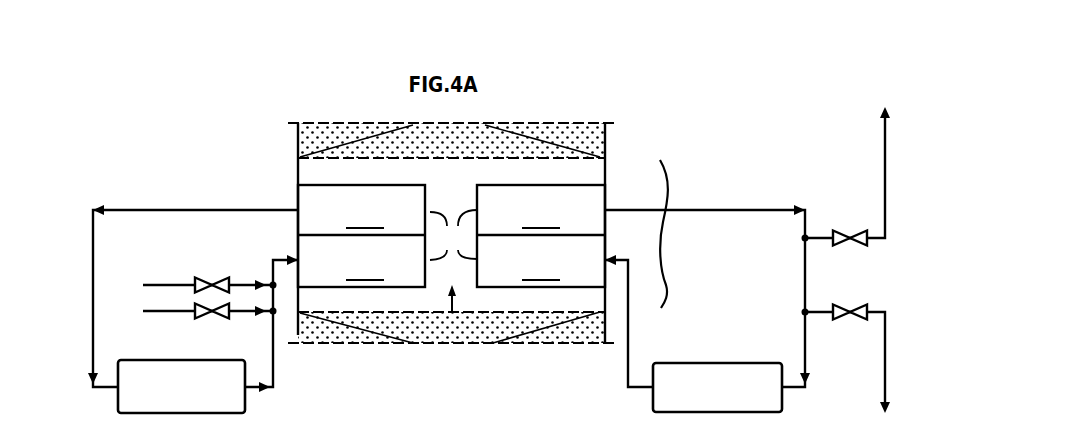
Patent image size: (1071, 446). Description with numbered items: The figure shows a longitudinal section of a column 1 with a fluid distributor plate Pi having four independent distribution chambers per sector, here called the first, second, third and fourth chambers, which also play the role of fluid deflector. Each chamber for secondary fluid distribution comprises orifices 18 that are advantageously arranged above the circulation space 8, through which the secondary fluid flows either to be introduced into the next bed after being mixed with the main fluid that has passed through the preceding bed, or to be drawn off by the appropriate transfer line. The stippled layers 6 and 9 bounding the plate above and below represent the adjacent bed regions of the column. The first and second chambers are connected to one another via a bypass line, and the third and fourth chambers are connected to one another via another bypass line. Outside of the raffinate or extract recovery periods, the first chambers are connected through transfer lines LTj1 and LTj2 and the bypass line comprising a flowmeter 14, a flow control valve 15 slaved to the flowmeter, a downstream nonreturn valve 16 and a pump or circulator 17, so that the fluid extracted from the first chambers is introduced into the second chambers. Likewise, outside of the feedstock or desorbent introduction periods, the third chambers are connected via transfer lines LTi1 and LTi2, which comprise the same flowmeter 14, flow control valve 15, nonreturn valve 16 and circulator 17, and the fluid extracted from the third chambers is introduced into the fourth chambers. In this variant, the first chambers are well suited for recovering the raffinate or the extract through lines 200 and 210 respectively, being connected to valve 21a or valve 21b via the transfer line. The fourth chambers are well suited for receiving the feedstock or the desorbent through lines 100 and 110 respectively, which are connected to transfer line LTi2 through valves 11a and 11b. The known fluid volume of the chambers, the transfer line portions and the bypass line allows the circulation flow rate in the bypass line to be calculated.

The distribution chamber 1 is at (266, 132).
The upper fluid distributor / frit layer 6 is at (380, 158).
The circulation space 8 is at (453, 311).
The lower fluid distributor / frit layer 9 is at (374, 313).
The orifices 18 is at (453, 235).
The valve 11a is at (230, 278).
The valve 11b is at (224, 318).
The valve 21a is at (854, 232).
The valve 21b is at (847, 293).
The feedstock line 100 is at (178, 280).
The desorbent line 110 is at (179, 316).
The raffinate line 200 is at (884, 128).
The extract line 210 is at (884, 342).
The flowmeter 14 is at (450, 386).
The flow control valve 15 is at (450, 386).
The nonreturn valve 16 is at (450, 386).
The pump or circulator 17 is at (450, 386).
The transfer line LTi1 is at (213, 207).
The transfer line LTi2 is at (263, 259).
The transfer line LTj1 is at (692, 197).
The transfer line LTj2 is at (612, 370).
The distributor plate Pi is at (676, 234).